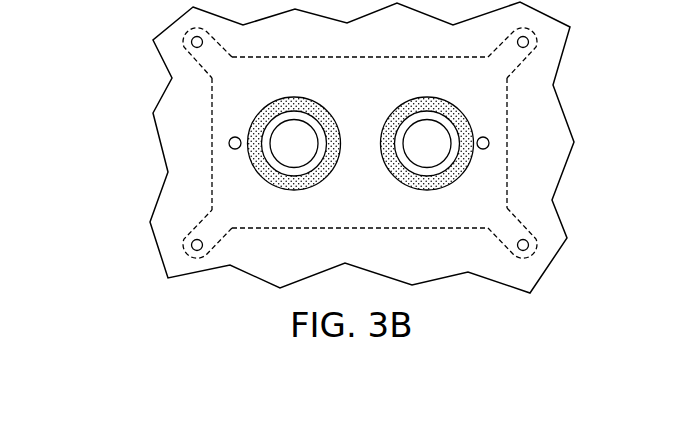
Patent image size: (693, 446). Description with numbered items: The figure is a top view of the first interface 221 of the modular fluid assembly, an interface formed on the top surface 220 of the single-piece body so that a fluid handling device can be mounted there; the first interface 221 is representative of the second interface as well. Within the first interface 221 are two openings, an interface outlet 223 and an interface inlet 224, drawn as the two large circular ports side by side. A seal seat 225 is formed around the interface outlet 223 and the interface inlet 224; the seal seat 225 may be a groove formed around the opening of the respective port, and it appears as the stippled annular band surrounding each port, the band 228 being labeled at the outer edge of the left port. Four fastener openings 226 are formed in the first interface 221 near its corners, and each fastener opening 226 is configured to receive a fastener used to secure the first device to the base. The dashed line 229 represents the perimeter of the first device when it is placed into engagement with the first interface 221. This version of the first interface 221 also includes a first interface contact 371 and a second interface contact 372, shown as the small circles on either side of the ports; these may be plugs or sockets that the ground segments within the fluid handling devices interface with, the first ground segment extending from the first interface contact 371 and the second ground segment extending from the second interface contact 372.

The top surface 220 is at (563, 225).
The first interface 221 is at (541, 123).
The interface outlet 223 is at (292, 135).
The interface inlet 224 is at (432, 133).
The seal seat 225 is at (398, 181).
The fastener openings 226 is at (191, 44).
The gasket 228 is at (319, 110).
The dashed line 229 is at (463, 230).
The first interface contact 371 is at (229, 144).
The second interface contact 372 is at (489, 144).